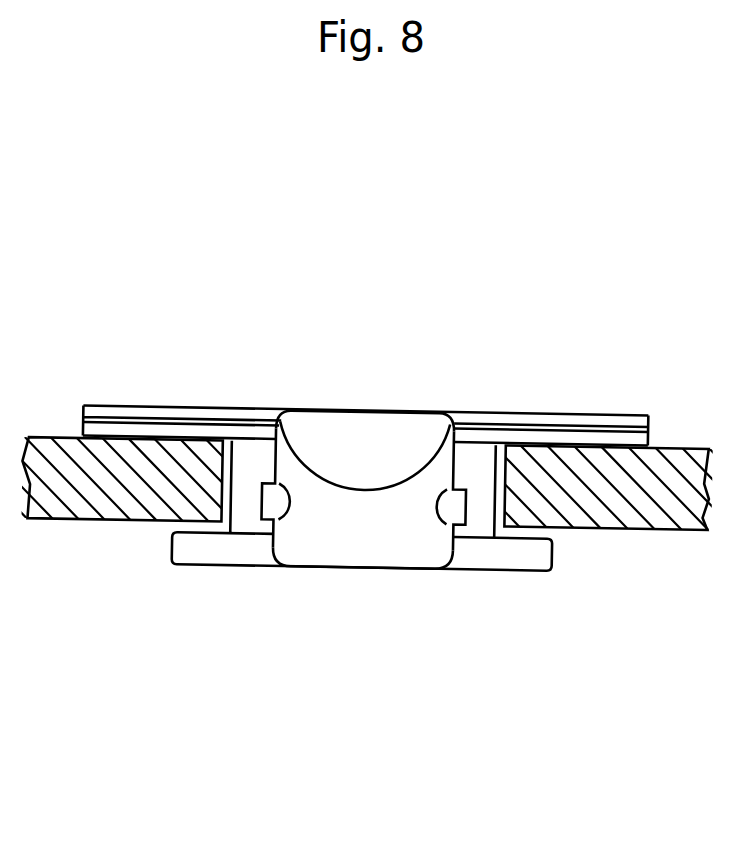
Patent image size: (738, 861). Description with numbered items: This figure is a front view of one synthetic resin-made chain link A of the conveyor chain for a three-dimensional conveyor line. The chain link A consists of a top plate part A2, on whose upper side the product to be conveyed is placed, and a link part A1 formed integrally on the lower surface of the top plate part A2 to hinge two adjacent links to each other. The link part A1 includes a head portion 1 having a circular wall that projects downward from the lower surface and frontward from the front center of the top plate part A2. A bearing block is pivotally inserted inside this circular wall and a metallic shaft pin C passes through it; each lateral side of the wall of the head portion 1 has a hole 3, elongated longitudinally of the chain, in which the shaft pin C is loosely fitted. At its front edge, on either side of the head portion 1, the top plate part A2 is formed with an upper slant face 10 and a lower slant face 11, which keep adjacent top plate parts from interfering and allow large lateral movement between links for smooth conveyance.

The head portion 1 is at (373, 448).
The hole 3 is at (273, 518).
The upper slant face 10 is at (577, 420).
The lower slant face 11 is at (599, 437).
The shaft pin C is at (263, 493).
The chain link A is at (304, 407).
The link part A1 is at (375, 568).
The top plate part A2 is at (137, 407).